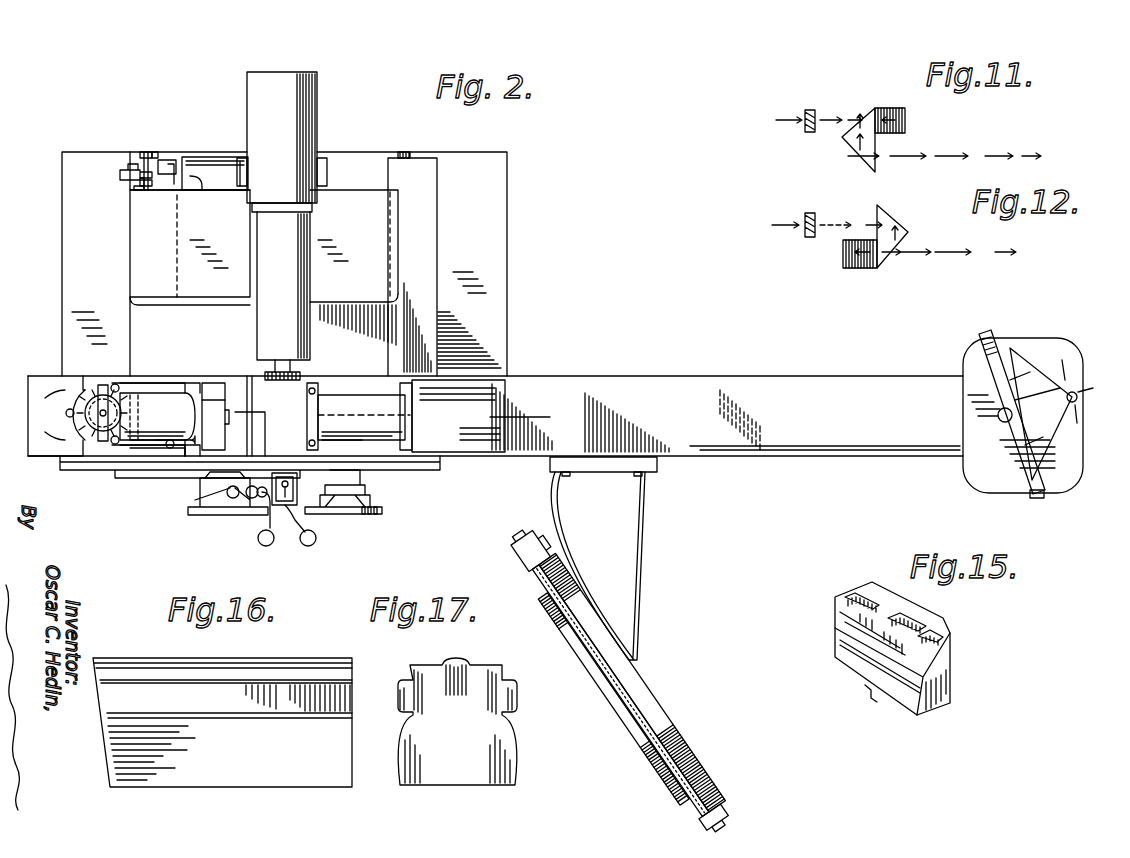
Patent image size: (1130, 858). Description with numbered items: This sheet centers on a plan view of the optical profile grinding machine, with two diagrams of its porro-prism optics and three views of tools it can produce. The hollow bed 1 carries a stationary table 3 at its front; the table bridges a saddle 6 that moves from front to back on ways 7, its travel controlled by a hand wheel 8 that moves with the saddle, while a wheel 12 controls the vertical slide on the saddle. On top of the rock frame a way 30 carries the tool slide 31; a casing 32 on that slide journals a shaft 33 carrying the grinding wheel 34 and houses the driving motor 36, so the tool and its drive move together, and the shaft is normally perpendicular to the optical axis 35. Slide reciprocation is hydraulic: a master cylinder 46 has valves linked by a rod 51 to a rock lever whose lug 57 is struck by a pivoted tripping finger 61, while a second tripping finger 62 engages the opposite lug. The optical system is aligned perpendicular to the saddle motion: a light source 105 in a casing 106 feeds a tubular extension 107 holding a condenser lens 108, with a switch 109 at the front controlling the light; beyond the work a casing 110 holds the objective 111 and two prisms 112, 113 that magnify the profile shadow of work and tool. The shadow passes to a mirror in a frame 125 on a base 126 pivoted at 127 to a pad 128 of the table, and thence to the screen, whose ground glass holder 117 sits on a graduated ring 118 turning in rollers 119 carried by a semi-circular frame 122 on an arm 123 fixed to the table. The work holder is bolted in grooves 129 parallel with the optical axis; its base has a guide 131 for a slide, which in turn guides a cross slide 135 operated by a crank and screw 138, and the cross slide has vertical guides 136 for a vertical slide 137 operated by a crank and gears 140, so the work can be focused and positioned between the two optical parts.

In FIG. 2, the hollow bed 1 is at (490, 240).
In FIG. 2, the table 3 is at (790, 376).
In FIG. 2, the saddle 6 is at (420, 213).
In FIG. 2, the ways 7 is at (152, 160).
In FIG. 2, the hand wheel 8 is at (222, 515).
In FIG. 2, the wheel 12 is at (360, 514).
In FIG. 2, the way 30 is at (128, 230).
In FIG. 2, the tool slide 31 is at (350, 206).
In FIG. 2, the casing 32 is at (315, 117).
In FIG. 2, the shaft 33 is at (283, 360).
In FIG. 2, the grinding wheel 34 is at (302, 376).
In FIG. 2, the optical axis 35 is at (134, 167).
In FIG. 2, the motor 36 is at (143, 158).
In FIG. 2, the master cylinder 46 is at (205, 162).
In FIG. 2, the rod 51 is at (168, 170).
In FIG. 2, the lug 57 is at (140, 183).
In FIG. 2, the tripping finger 61 is at (193, 192).
In FIG. 2, the tripping finger 62 is at (142, 188).
In FIG. 2, the light source 105 is at (72, 456).
In FIG. 2, the casing 106 is at (100, 392).
In FIG. 2, the tubular extension 107 is at (180, 382).
In FIG. 2, the condenser lens 108 is at (152, 392).
In FIG. 2, the switch 109 is at (290, 505).
In FIG. 2, the casing 110 is at (412, 413).
In FIG. 11, the objective 111 is at (802, 134).
In FIG. 12, the objective 111 is at (802, 241).
In FIG. 11, the prism 112 is at (906, 121).
In FIG. 12, the prism 112 is at (886, 209).
In FIG. 11, the prism 113 is at (847, 154).
In FIG. 12, the prism 113 is at (860, 268).
In FIG. 2, the ground glass holder 117 is at (608, 703).
In FIG. 2, the ring 118 is at (623, 689).
In FIG. 2, the rollers 119 is at (522, 563).
In FIG. 2, the semi-circular frame 122 is at (708, 765).
In FIG. 2, the arm 123 is at (627, 523).
In FIG. 2, the mirror frame 125 is at (1042, 499).
In FIG. 2, the base 126 is at (1038, 378).
In FIG. 2, the pivot 127 is at (998, 416).
In FIG. 2, the pad 128 is at (1070, 457).
In FIG. 2, the grooves 129 is at (345, 378).
In FIG. 2, the guide 131 is at (318, 404).
In FIG. 2, the cross slide 135 is at (214, 383).
In FIG. 2, the vertical guides 136 is at (250, 447).
In FIG. 2, the vertical slide 137 is at (244, 427).
In FIG. 2, the crank and screw 138 is at (248, 498).
In FIG. 2, the crank and gears 140 is at (190, 450).